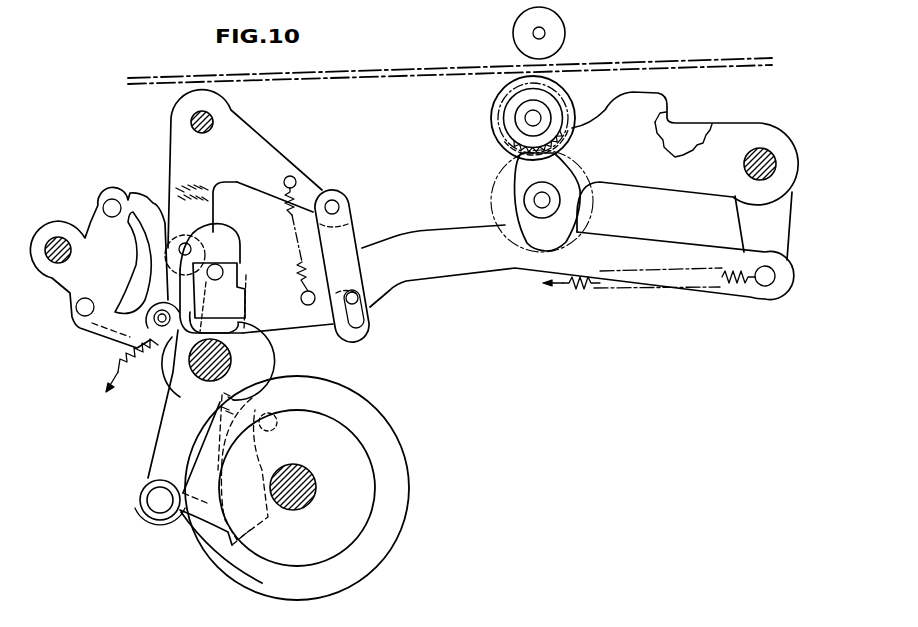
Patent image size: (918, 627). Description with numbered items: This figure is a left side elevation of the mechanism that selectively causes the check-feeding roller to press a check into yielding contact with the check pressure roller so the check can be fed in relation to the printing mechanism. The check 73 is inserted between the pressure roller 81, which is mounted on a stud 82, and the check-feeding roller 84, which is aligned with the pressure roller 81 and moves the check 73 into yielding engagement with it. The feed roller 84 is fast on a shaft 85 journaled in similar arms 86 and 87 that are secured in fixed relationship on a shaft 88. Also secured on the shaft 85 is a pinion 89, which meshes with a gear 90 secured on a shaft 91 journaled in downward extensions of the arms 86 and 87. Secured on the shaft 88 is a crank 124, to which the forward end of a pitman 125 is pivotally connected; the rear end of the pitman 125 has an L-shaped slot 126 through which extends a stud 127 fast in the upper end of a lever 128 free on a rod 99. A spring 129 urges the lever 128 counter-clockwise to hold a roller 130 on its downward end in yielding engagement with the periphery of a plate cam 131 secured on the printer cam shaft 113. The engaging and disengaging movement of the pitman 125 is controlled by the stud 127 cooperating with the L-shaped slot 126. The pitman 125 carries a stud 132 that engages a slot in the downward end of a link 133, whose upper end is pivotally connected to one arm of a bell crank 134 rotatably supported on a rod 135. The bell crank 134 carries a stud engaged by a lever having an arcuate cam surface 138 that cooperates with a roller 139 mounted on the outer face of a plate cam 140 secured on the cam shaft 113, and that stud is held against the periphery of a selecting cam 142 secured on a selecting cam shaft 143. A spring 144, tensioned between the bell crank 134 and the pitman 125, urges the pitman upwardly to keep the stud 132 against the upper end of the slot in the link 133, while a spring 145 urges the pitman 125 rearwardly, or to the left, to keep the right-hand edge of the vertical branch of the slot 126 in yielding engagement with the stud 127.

The check 73 is at (437, 70).
The pressure roller 81 is at (556, 40).
The stud 82 is at (545, 31).
The check-feeding roller 84 is at (556, 88).
The shaft 85 is at (530, 119).
The arm 86 is at (684, 134).
The arm 87 is at (730, 137).
The shaft 88 is at (773, 152).
The pinion 89 is at (566, 140).
The gear 90 is at (583, 204).
The shaft 91 is at (548, 198).
The rod 99 is at (212, 362).
The printer cam shaft 113 is at (310, 470).
The crank 124 is at (735, 212).
The pitman 125 is at (648, 254).
The L-shaped slot 126 is at (246, 298).
The stud 127 is at (218, 270).
The lever 128 is at (236, 353).
The spring 129 is at (124, 352).
The roller 130 is at (140, 502).
The plate cam 131 is at (380, 495).
The stud 132 is at (360, 292).
The link 133 is at (350, 230).
The bell crank 134 is at (265, 150).
The rod 135 is at (215, 118).
The arcuate cam surface 138 is at (252, 462).
The roller 139 is at (275, 412).
The plate cam 140 is at (385, 446).
The selecting cam 142 is at (153, 200).
The selecting cam shaft 143 is at (58, 264).
The spring 144 is at (296, 260).
The spring 145 is at (640, 292).